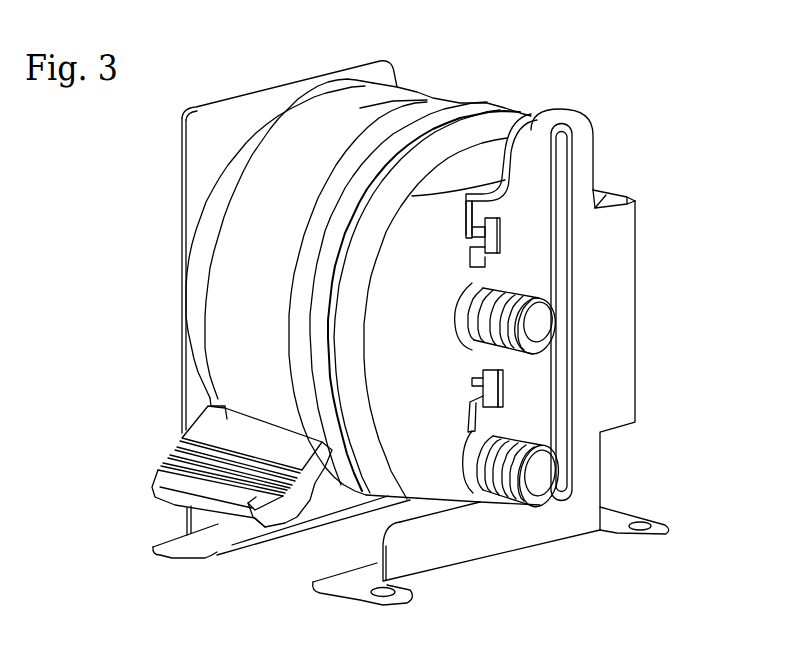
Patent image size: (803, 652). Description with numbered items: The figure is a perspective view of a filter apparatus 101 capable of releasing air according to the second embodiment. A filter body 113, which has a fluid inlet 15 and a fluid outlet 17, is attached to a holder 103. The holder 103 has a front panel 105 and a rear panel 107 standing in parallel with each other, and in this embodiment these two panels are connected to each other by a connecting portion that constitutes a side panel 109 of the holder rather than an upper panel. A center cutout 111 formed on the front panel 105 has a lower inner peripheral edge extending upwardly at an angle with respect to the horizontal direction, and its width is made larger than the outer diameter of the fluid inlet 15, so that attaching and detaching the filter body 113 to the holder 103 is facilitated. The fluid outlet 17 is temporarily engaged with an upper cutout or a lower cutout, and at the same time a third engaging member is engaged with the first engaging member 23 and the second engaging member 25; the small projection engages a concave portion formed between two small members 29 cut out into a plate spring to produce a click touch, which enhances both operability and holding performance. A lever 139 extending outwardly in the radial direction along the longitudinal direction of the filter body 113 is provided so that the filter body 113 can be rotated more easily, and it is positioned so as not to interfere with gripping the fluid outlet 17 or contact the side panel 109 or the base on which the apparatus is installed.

The filter apparatus 101 is at (597, 57).
The holder 103 is at (637, 293).
The front panel 105 is at (583, 478).
The rear panel 107 is at (256, 93).
The side panel 109 is at (615, 192).
The center cutout 111 is at (500, 280).
The filter body 113 is at (415, 88).
The fluid inlet 15 is at (540, 345).
The fluid outlet 17 is at (543, 480).
The first engaging member 23 is at (512, 225).
The second engaging member 25 is at (512, 392).
The small members 29 is at (473, 230).
The lever 139 is at (157, 470).